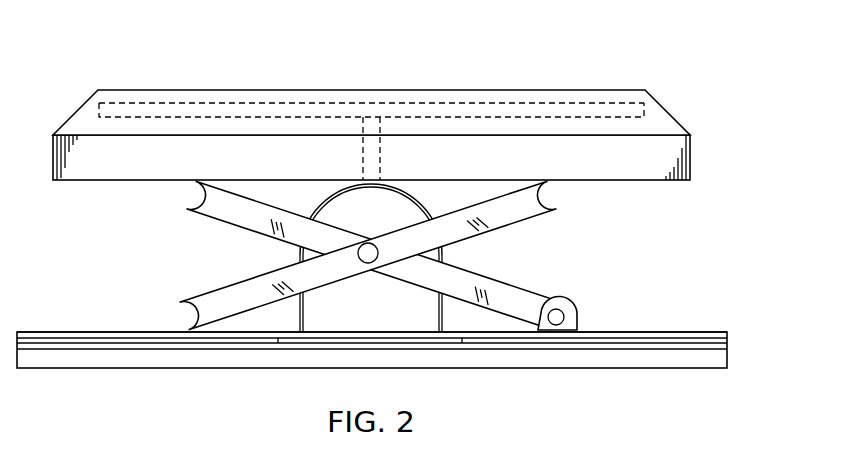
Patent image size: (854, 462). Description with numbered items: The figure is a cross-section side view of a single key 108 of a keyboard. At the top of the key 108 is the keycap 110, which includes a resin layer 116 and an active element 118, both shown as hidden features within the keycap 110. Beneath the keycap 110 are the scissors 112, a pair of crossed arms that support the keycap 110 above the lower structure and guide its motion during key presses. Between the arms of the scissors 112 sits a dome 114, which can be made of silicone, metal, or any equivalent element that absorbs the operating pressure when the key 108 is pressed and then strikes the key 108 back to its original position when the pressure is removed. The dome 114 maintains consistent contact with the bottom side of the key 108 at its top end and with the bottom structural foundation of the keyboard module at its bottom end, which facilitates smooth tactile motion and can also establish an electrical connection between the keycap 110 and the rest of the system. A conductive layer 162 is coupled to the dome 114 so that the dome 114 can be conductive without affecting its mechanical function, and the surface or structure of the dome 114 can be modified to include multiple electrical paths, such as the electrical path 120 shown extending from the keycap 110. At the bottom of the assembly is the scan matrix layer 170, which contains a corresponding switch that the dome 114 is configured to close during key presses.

The key 108 is at (593, 54).
The keycap 110 is at (83, 120).
The scissors 112 is at (517, 216).
The dome 114 is at (421, 314).
The resin layer 116 is at (160, 99).
The active element 118 is at (510, 108).
The electrical path 120 is at (362, 155).
The conductive layer 162 is at (300, 250).
The scan matrix layer 170 is at (736, 339).